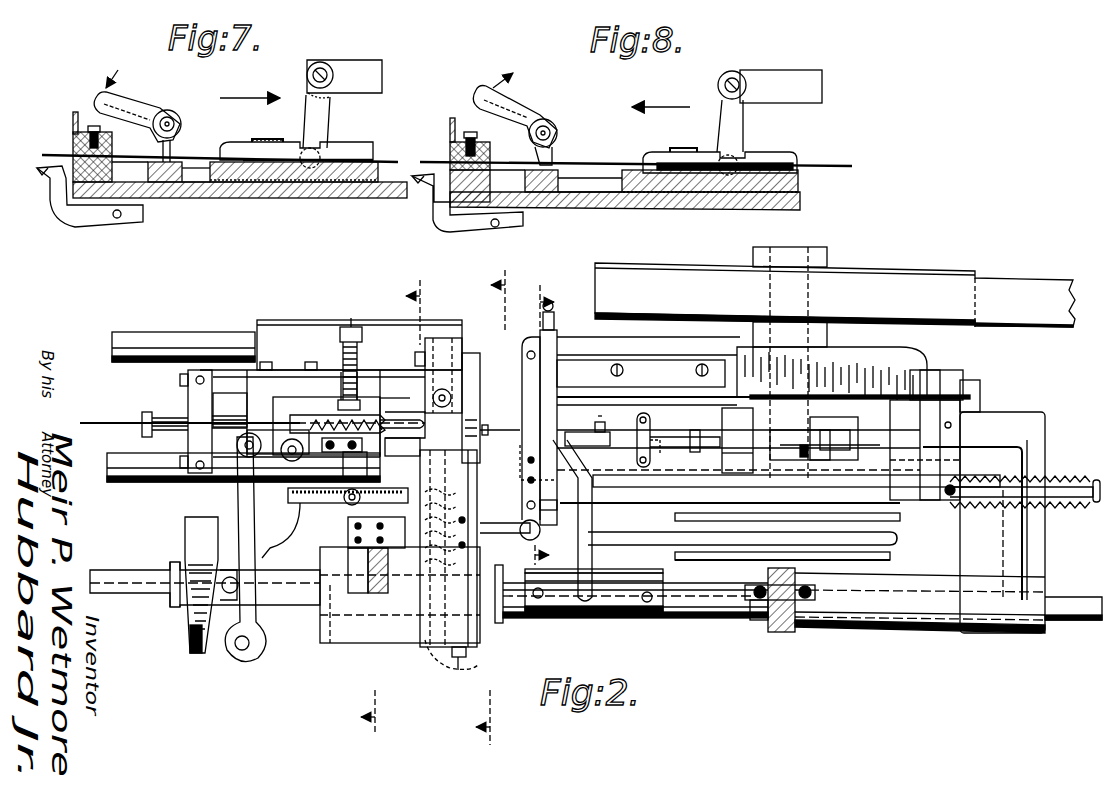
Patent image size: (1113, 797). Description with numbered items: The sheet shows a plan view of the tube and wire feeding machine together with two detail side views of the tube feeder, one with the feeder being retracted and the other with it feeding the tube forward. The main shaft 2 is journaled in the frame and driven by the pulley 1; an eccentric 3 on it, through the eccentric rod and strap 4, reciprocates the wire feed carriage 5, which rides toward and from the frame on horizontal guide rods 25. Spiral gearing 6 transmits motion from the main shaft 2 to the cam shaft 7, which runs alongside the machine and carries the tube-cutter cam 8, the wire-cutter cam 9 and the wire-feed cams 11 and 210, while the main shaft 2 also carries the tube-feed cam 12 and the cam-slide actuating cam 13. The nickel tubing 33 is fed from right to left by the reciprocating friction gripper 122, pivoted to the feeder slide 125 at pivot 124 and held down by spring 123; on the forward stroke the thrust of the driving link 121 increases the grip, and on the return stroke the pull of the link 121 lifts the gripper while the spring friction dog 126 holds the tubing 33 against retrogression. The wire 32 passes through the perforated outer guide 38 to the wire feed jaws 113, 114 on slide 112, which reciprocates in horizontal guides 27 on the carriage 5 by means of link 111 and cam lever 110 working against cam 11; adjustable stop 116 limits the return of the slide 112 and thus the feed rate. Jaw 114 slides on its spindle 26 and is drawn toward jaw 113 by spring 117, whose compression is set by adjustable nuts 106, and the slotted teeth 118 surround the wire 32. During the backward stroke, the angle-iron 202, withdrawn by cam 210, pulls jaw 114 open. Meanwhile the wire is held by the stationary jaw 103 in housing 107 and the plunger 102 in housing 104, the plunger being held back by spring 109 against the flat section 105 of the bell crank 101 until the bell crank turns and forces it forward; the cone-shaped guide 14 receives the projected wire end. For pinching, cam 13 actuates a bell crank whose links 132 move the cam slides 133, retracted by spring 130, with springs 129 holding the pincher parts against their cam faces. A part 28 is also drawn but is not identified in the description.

In FIG. 2, the pulley 1 is at (950, 270).
In FIG. 2, the main shaft 2 is at (808, 248).
In FIG. 2, the eccentric 3 is at (912, 555).
In FIG. 2, the eccentric rod and strap 4 is at (510, 538).
In FIG. 2, the wire feed carriage 5 is at (418, 645).
In FIG. 2, the spiral gearing 6 is at (788, 633).
In FIG. 2, the cam shaft 7 is at (706, 612).
In FIG. 2, the tube-cutter cam 8 is at (628, 618).
In FIG. 2, the wire-cutter cam 9 is at (506, 628).
In FIG. 2, the wire-feed cam 11 is at (180, 628).
In FIG. 2, the tube-feed cam 12 is at (830, 438).
In FIG. 2, the cam-slide actuating cam 13 is at (557, 507).
In FIG. 2, the perforated two-part cone-shaped guide 14 is at (500, 421).
In FIG. 2, the horizontal guide rods 25 is at (130, 340).
In FIG. 2, the spindle 26 is at (352, 325).
In FIG. 2, the horizontal guides 27 is at (331, 409).
In FIG. 2, the bar 28 is at (590, 560).
In FIG. 2, the wire 32 is at (97, 422).
In FIG. 7, the nickel tubing 33 is at (388, 160).
In FIG. 8, the nickel tubing 33 is at (832, 166).
In FIG. 2, the perforated outer guide 38 is at (195, 410).
In FIG. 2, the bell crank 101 is at (440, 672).
In FIG. 2, the movable gripper or plunger 102 is at (332, 412).
In FIG. 2, the stationary jaw 103 is at (470, 418).
In FIG. 2, the housing 104 is at (440, 470).
In FIG. 2, the flat section of bell crank shaft 105 is at (462, 657).
In FIG. 2, the adjustable nuts 106 is at (345, 325).
In FIG. 2, the housing 107 is at (462, 348).
In FIG. 2, the spring 109 is at (462, 512).
In FIG. 2, the cam lever 110 is at (240, 497).
In FIG. 2, the link 111 is at (273, 434).
In FIG. 2, the slide 112 is at (280, 405).
In FIG. 2, the wire feed jaw 113 is at (385, 415).
In FIG. 2, the wire feed jaw 114 is at (403, 439).
In FIG. 2, the adjustable stop 116 is at (231, 410).
In FIG. 2, the spring 117 is at (360, 366).
In FIG. 2, the teeth 118 is at (315, 415).
In FIG. 7, the driving link 121 is at (358, 60).
In FIG. 8, the driving link 121 is at (786, 70).
In FIG. 2, the driving link 121 is at (808, 455).
In FIG. 7, the reciprocating friction gripper 122 is at (232, 142).
In FIG. 8, the reciprocating friction gripper 122 is at (648, 166).
In FIG. 2, the reciprocating friction gripper 122 is at (660, 440).
In FIG. 7, the spring 123 is at (268, 139).
In FIG. 8, the spring 123 is at (683, 148).
In FIG. 2, the spring 123 is at (642, 414).
In FIG. 7, the pivot 124 is at (338, 150).
In FIG. 8, the pivot 124 is at (742, 158).
In FIG. 8, the slide 125 is at (800, 186).
In FIG. 7, the spring friction dog 126 is at (158, 143).
In FIG. 8, the spring friction dog 126 is at (535, 145).
In FIG. 2, the spring friction dog 126 is at (583, 452).
In FIG. 2, the springs 129 is at (557, 373).
In FIG. 2, the spring 130 is at (1065, 480).
In FIG. 2, the links 132 is at (930, 395).
In FIG. 2, the cam slides 133 is at (737, 380).
In FIG. 2, the angle-iron 202 is at (290, 504).
In FIG. 2, the wire-feed cam 210 is at (376, 640).